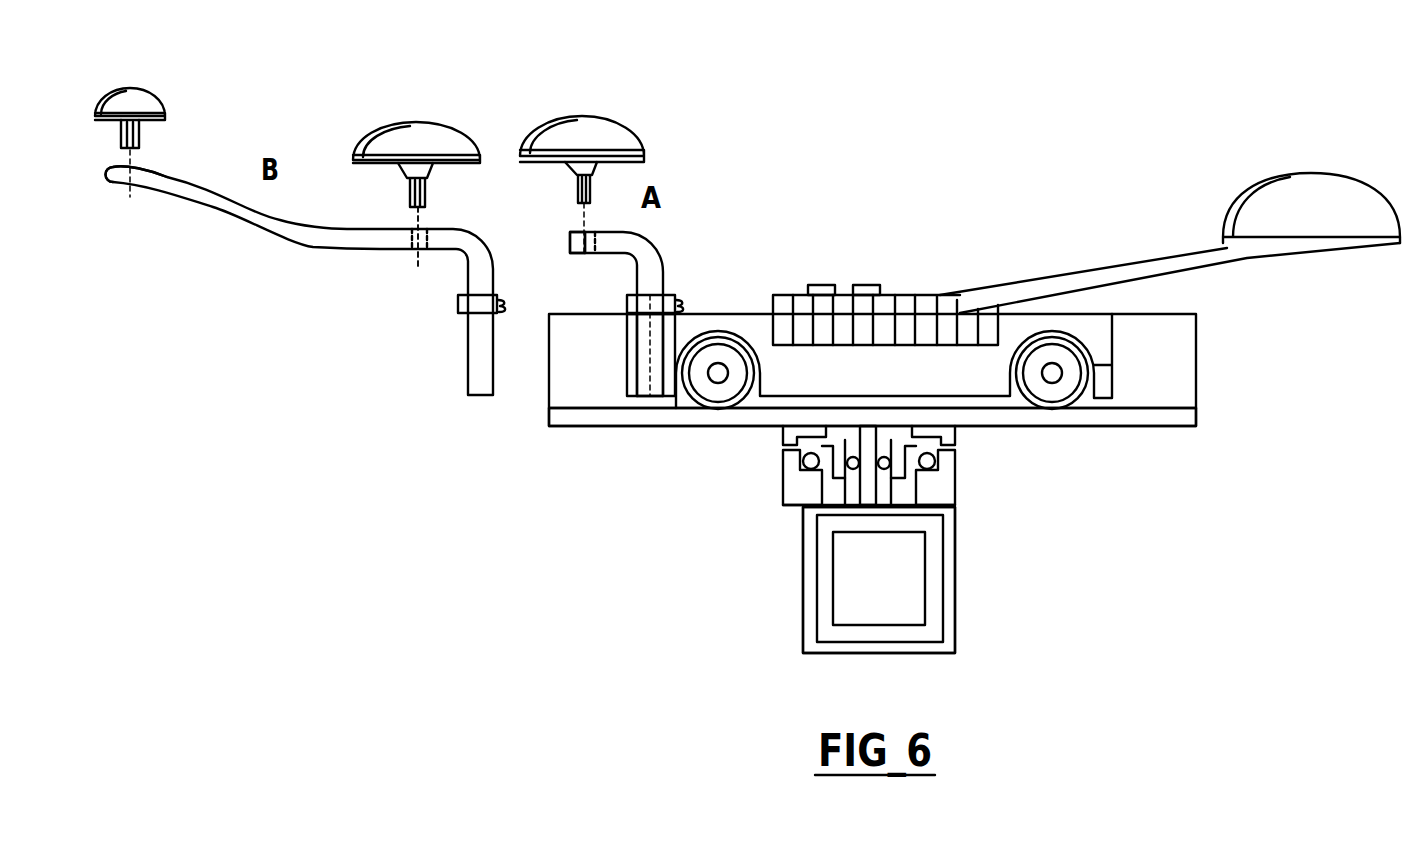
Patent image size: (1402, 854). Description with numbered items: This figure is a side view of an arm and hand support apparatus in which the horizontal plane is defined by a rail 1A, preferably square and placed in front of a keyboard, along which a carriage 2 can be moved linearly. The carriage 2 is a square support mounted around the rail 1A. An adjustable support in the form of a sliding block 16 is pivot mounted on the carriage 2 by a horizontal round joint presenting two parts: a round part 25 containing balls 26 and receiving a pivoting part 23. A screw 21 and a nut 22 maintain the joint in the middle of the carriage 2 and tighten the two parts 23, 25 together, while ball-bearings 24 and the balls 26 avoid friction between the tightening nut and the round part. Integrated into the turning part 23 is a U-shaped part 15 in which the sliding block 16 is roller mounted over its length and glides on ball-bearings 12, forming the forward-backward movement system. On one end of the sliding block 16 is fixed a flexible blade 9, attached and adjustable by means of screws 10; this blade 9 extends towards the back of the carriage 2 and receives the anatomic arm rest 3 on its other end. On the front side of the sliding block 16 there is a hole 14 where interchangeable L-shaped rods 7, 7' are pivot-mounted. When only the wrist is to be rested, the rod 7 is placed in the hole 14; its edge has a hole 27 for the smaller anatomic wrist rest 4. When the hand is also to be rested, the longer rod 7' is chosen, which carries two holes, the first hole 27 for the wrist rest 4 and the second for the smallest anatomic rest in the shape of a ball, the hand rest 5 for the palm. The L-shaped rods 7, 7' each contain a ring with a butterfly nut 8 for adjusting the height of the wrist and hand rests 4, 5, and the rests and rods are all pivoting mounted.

The rail 1A is at (933, 607).
The carriage 2 is at (808, 583).
The anatomic arm rest 3 is at (1253, 212).
The wrist rest 4 is at (423, 138).
The hand rest 5 is at (147, 100).
The L-shaped rod 7 is at (646, 294).
The L-shaped rod 7' is at (300, 280).
The butterfly nut 8 is at (500, 295).
The flexible blade 9 is at (1072, 283).
The screw 10 is at (858, 285).
The ball-bearings 12 is at (1082, 373).
The hole 14 is at (637, 367).
The U-shaped part 15 is at (1098, 422).
The sliding-block adjustable support 16 is at (963, 367).
The screw 21 is at (878, 480).
The nut 22 is at (973, 440).
The pivoting part 23 is at (798, 435).
The ball-bearings 24 is at (810, 462).
The round part 25 is at (797, 495).
The balls 26 is at (910, 463).
The hole 27 is at (135, 183).